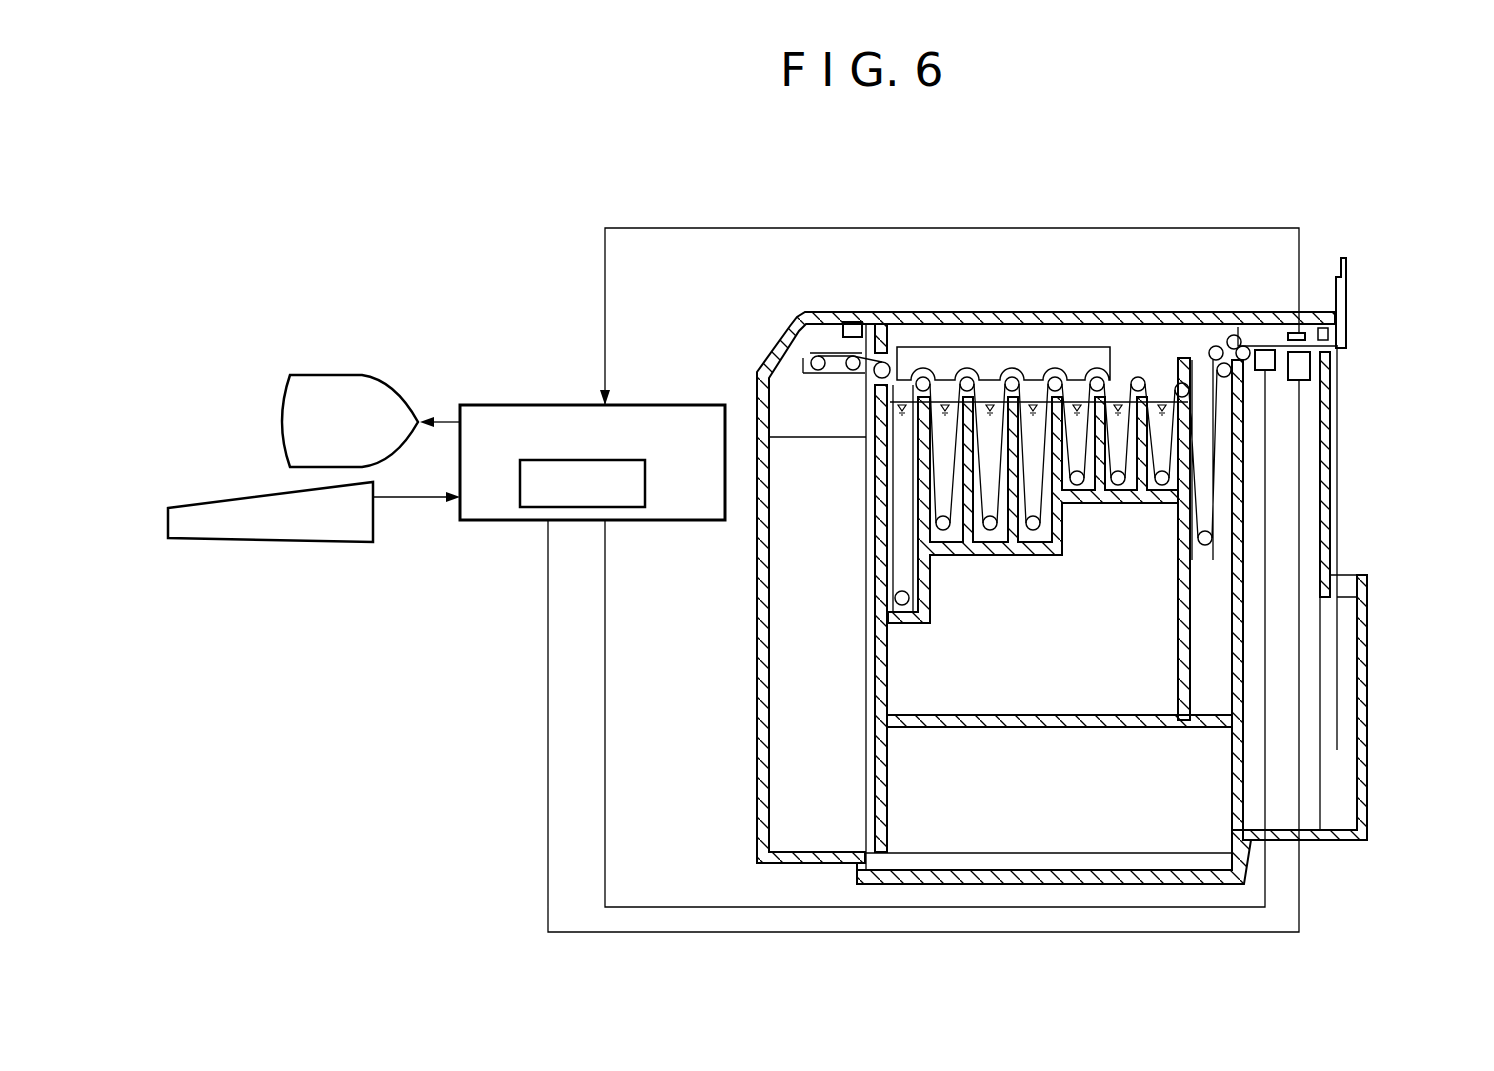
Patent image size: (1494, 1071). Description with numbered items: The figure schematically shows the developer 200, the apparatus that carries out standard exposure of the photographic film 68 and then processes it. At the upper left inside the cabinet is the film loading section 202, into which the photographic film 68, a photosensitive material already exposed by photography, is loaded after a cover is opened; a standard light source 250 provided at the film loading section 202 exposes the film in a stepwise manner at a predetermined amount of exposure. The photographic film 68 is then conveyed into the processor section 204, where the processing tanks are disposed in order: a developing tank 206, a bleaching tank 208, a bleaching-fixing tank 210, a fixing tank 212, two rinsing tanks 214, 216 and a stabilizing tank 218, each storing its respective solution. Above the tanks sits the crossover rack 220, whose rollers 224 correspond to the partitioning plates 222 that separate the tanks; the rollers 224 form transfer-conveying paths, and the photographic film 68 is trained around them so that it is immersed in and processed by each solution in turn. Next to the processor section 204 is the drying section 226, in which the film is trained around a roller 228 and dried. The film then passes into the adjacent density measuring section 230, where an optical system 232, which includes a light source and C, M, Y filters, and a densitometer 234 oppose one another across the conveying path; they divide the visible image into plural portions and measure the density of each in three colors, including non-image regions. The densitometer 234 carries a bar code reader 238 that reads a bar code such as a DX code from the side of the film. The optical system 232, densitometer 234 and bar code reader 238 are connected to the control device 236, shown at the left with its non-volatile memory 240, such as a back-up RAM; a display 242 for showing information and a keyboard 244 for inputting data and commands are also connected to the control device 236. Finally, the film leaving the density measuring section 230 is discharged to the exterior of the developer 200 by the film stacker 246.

The developer 200 is at (1200, 205).
The film loading section 202 is at (848, 418).
The processor section 204 is at (1100, 701).
The developing tank 206 is at (903, 612).
The bleaching tank 208 is at (947, 548).
The bleaching-fixing tank 210 is at (989, 540).
The fixing tank 212 is at (1042, 548).
The rinsing tank 214 is at (1070, 500).
The rinsing tank 216 is at (1122, 498).
The stabilizing tank 218 is at (1172, 500).
The crossover rack 220 is at (950, 340).
The partitioning plates 222 is at (1012, 377).
The rollers 224 is at (922, 375).
The drying section 226 is at (1213, 687).
The roller 228 is at (1204, 545).
The density measuring section 230 is at (1422, 548).
The optical system 232 is at (1300, 332).
The densitometer 234 is at (1312, 370).
The control device 236 is at (528, 405).
The bar code reader 238 is at (1265, 350).
The non-volatile memory 240 is at (615, 520).
The display 242 is at (279, 397).
The keyboard 244 is at (225, 498).
The film stacker 246 is at (1352, 330).
The standard light source 250 is at (852, 322).
The photographic film 68 is at (833, 352).